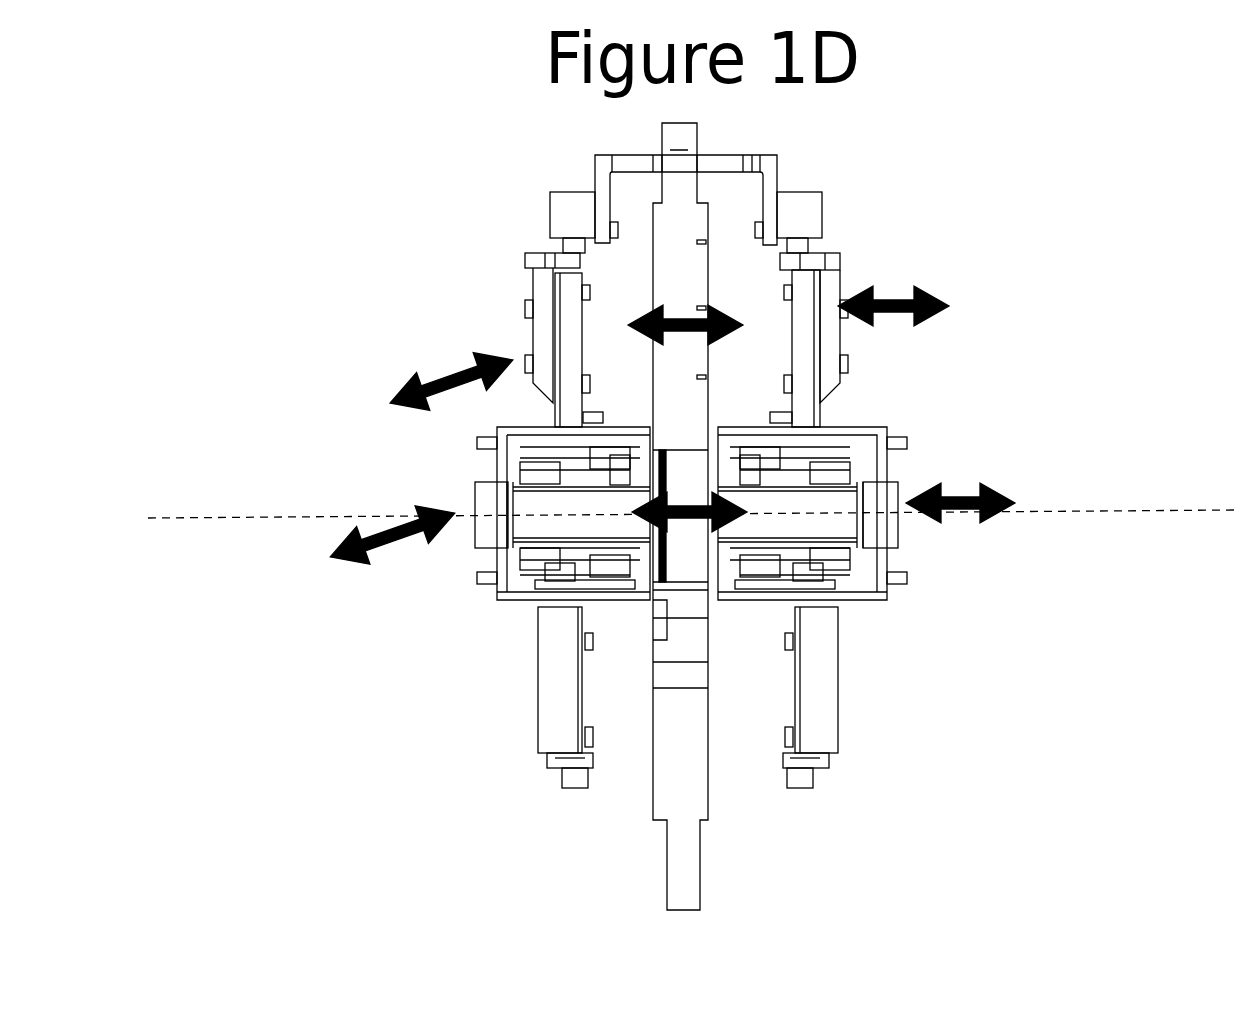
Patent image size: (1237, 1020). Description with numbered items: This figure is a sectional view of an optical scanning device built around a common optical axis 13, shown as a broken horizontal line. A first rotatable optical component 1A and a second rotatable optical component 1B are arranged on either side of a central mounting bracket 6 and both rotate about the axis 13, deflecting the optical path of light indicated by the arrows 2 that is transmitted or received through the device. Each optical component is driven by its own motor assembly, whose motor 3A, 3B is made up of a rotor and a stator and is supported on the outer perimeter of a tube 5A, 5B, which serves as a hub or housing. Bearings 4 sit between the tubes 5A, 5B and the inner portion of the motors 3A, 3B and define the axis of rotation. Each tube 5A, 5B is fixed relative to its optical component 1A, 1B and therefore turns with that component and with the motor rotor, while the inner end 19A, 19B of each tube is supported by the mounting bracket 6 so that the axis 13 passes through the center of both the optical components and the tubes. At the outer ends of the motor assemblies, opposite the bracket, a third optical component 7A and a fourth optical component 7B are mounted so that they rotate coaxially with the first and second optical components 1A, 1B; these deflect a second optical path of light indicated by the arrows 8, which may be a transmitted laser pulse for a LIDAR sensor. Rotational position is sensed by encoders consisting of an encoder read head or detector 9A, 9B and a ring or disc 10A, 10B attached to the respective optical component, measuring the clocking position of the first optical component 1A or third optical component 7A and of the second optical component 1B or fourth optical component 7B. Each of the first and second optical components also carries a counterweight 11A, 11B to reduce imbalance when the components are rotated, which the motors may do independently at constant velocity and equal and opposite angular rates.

The first rotatable optical component 1A is at (547, 768).
The second rotatable optical component 1B is at (827, 773).
The optical path of light 2 is at (720, 295).
The motor 3A is at (650, 553).
The motor 3B is at (728, 553).
The bearings 4 is at (558, 572).
The tube 5A is at (558, 732).
The tube 5B is at (808, 732).
The mounting bracket 6 is at (685, 258).
The third optical component 7A is at (493, 527).
The fourth optical component 7B is at (882, 523).
The second optical path of light 8 is at (374, 508).
The encoder read head 9A is at (578, 218).
The encoder read head 9B is at (793, 218).
The encoder ring 10A is at (580, 787).
The graduated ring 10B is at (797, 788).
The counterweight 11A is at (538, 308).
The counterweight 11B is at (836, 332).
The optical axis 13 is at (215, 512).
The inner end 19A is at (418, 378).
The inner end 19B is at (980, 462).